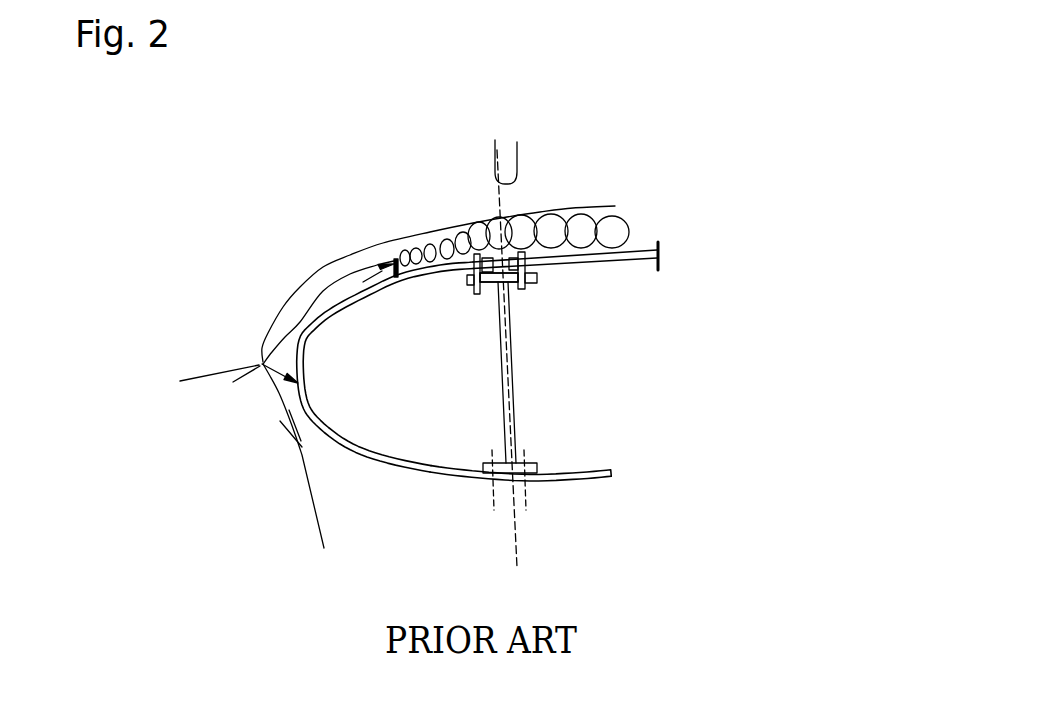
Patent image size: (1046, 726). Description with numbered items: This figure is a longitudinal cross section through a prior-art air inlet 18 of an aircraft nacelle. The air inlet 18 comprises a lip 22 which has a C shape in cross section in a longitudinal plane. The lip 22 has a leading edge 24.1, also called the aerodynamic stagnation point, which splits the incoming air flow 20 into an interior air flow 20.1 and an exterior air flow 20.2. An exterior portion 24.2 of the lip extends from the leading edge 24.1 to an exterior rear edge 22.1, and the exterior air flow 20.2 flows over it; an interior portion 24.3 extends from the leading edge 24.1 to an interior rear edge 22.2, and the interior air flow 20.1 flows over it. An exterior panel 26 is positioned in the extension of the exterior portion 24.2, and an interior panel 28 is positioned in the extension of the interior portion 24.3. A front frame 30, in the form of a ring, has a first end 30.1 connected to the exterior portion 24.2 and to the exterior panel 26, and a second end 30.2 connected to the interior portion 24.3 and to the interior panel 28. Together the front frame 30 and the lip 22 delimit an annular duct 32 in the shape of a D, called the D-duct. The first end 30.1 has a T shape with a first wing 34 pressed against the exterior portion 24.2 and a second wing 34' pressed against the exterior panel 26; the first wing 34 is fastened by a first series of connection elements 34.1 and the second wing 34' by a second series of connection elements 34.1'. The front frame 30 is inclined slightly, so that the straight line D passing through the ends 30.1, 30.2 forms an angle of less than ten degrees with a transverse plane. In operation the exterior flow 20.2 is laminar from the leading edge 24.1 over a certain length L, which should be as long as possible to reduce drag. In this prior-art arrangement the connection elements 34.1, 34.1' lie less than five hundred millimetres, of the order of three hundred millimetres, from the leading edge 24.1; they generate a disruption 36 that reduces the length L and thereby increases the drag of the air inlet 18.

The air inlet 18 is at (246, 469).
The air flow 20 is at (202, 375).
The interior air flow 20.1 is at (284, 407).
The exterior air flow 20.2 is at (310, 314).
The lip 22 is at (366, 458).
The exterior rear edge 22.1 is at (484, 250).
The interior rear edge 22.2 is at (506, 478).
The leading edge 24.1 is at (275, 386).
The exterior portion 24.2 is at (395, 258).
The interior portion 24.3 is at (416, 474).
The exterior panel 26 is at (634, 244).
The interior panel 28 is at (599, 485).
The front frame 30 is at (526, 377).
The first end 30.1 is at (510, 287).
The second end 30.2 is at (515, 463).
The annular duct 32 is at (417, 367).
The first wing 34 is at (459, 299).
The second wing 34' is at (540, 274).
The first series of connection elements 34.1 is at (428, 212).
The second series of connection elements 34.1' is at (570, 212).
The disruption 36 is at (530, 217).
The straight line D is at (511, 343).
The length L is at (273, 319).